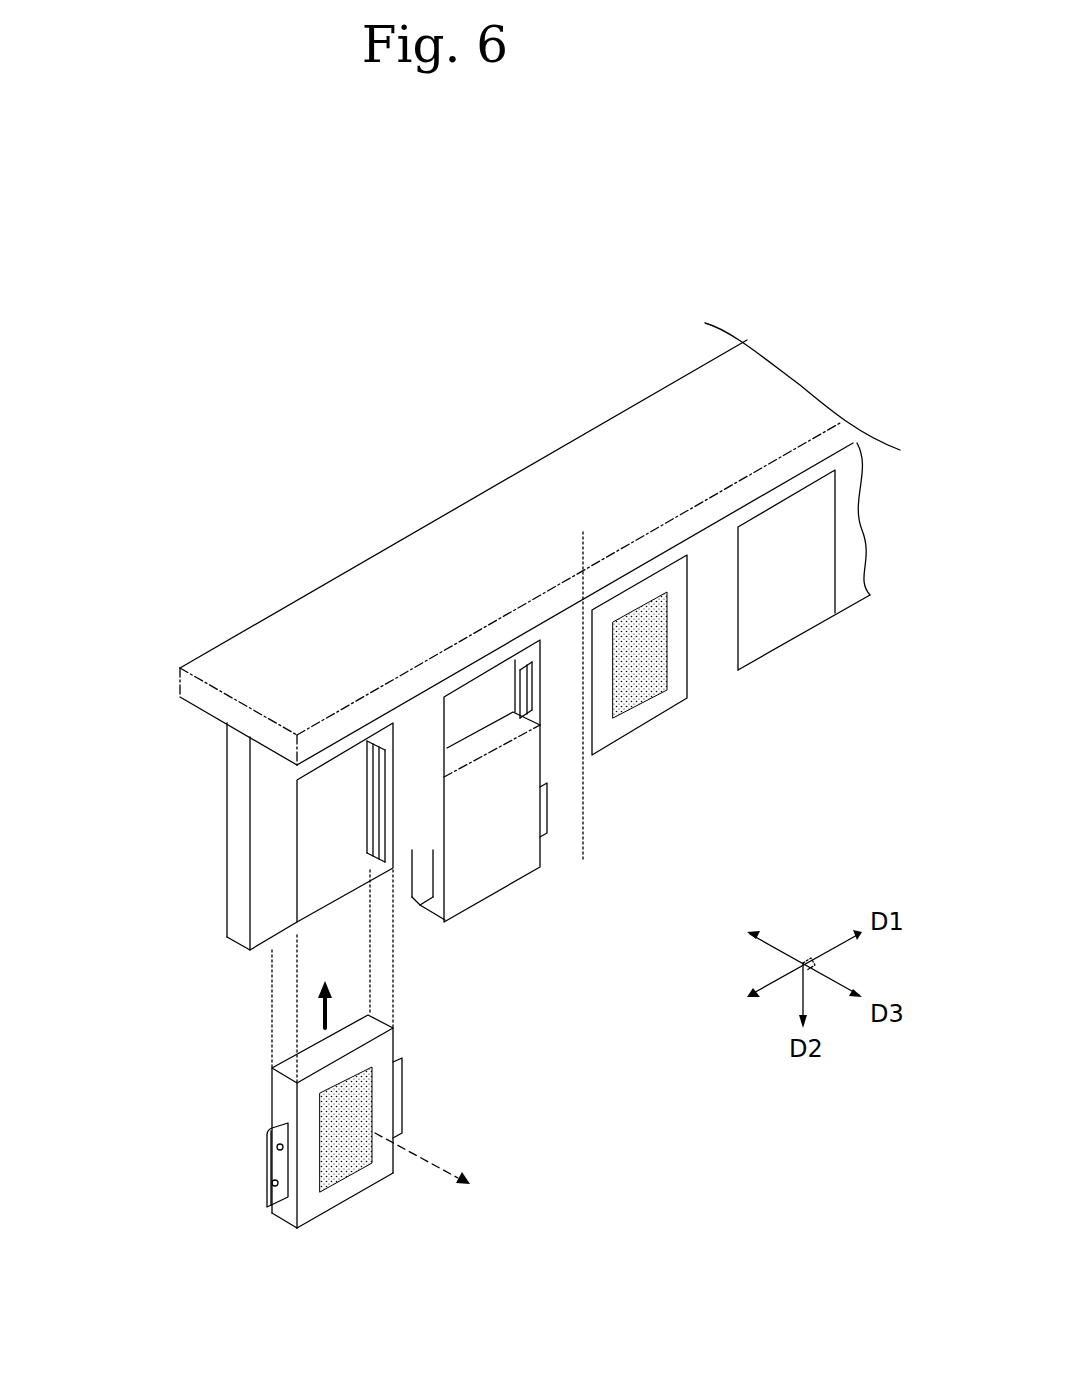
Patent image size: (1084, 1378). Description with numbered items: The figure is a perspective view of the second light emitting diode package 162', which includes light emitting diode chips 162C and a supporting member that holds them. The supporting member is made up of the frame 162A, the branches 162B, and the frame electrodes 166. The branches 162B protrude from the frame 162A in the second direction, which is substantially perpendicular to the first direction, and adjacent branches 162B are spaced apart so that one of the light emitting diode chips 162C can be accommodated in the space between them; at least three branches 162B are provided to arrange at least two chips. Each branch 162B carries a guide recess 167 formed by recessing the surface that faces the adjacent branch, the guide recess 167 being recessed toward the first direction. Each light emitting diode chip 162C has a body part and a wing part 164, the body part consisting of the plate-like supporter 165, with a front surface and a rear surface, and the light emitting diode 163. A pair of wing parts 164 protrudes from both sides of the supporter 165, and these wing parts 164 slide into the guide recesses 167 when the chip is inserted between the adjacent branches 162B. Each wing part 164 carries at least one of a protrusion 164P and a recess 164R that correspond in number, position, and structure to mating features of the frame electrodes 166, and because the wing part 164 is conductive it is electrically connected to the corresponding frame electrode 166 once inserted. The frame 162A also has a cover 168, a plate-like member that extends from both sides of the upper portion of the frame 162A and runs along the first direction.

The second light emitting diode package 162' is at (481, 646).
The cover 168 is at (180, 688).
The frame 162A is at (324, 758).
The branches 162B is at (272, 858).
The light emitting diode chips 162C is at (314, 1234).
The guide recess 167 is at (372, 792).
The frame electrodes 166 is at (381, 868).
The light emitting diode 163 is at (362, 1140).
The wing part 164 is at (270, 1167).
The protrusion 164P is at (270, 1157).
The recess 164R is at (270, 1185).
The supporter 165 is at (343, 1195).